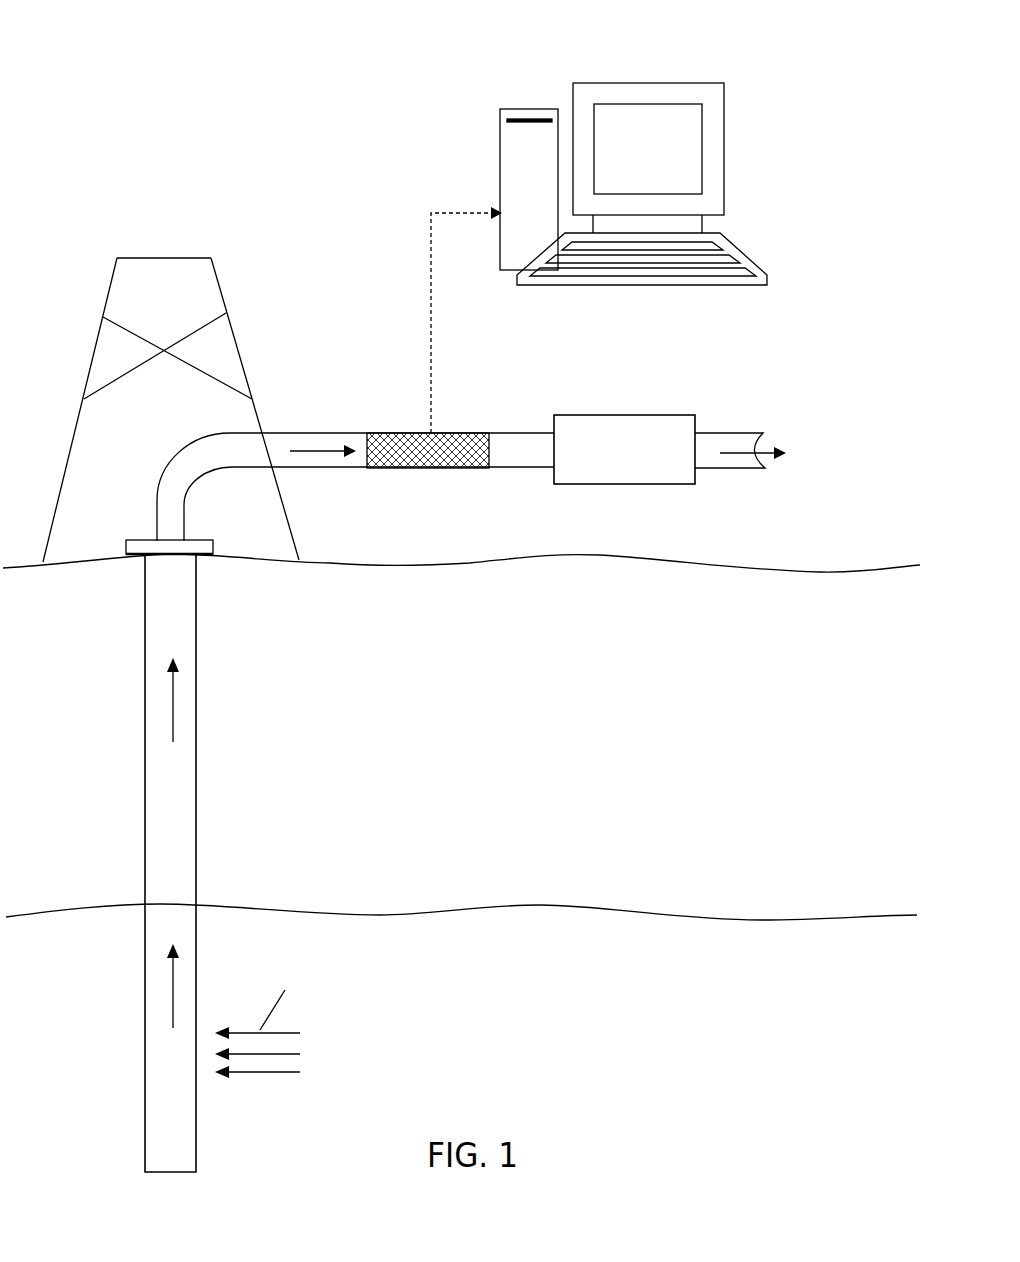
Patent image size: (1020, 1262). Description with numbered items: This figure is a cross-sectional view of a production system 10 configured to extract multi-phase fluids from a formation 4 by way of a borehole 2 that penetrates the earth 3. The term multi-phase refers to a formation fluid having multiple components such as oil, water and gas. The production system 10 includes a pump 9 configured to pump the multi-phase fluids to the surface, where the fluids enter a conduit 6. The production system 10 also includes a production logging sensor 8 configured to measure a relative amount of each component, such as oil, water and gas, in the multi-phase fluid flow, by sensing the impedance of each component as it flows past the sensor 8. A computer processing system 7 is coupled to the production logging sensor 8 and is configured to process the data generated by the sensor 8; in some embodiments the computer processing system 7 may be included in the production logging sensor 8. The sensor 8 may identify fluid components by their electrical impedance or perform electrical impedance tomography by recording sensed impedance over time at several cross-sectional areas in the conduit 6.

The production system 10 is at (156, 134).
The computer processing system 7 is at (522, 108).
The conduit 6 is at (333, 433).
The production logging sensor 8 is at (420, 468).
The pump 9 is at (624, 449).
The borehole 2 is at (192, 650).
The earth 3 is at (461, 588).
The formation 4 is at (461, 991).